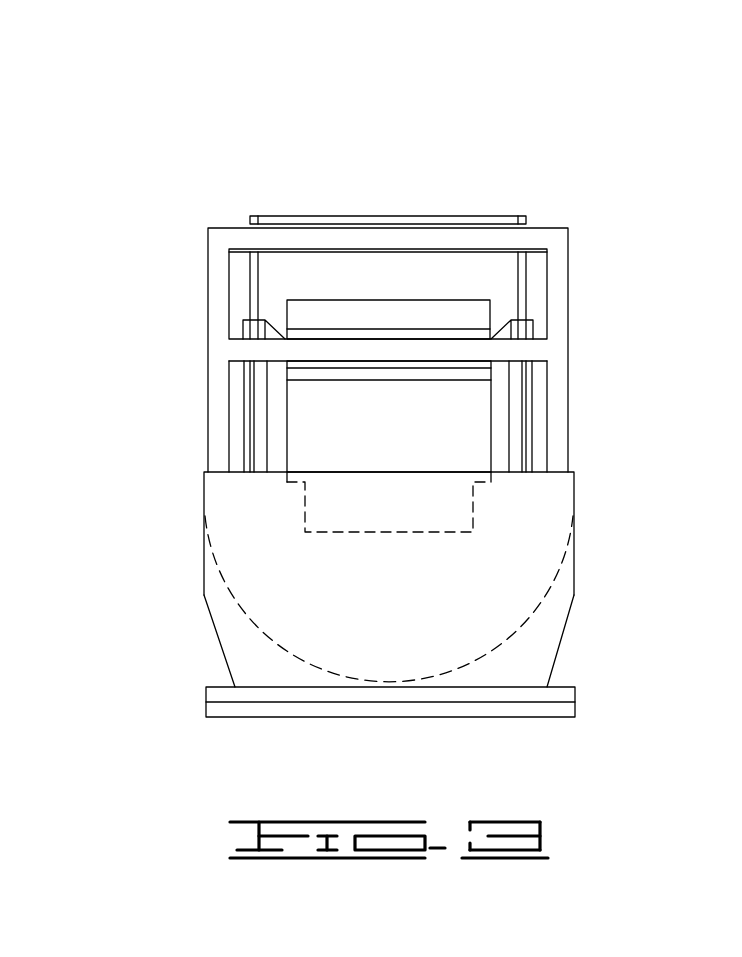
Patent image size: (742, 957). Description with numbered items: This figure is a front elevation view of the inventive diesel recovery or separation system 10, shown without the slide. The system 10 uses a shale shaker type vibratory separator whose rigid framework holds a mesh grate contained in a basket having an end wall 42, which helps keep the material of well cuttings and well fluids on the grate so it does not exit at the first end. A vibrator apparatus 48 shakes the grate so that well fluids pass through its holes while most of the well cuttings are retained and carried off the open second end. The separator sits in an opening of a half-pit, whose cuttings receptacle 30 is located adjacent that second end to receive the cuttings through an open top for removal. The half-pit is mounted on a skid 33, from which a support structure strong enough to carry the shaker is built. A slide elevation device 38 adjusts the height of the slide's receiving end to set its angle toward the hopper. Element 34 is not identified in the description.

The separation system 10 is at (183, 127).
The cuttings receptacle 30 is at (540, 602).
The skid 33 is at (575, 700).
The frame 34 is at (208, 388).
The slide elevation device 38 is at (430, 215).
The end wall 42 is at (466, 428).
The vibrator apparatus 48 is at (472, 317).